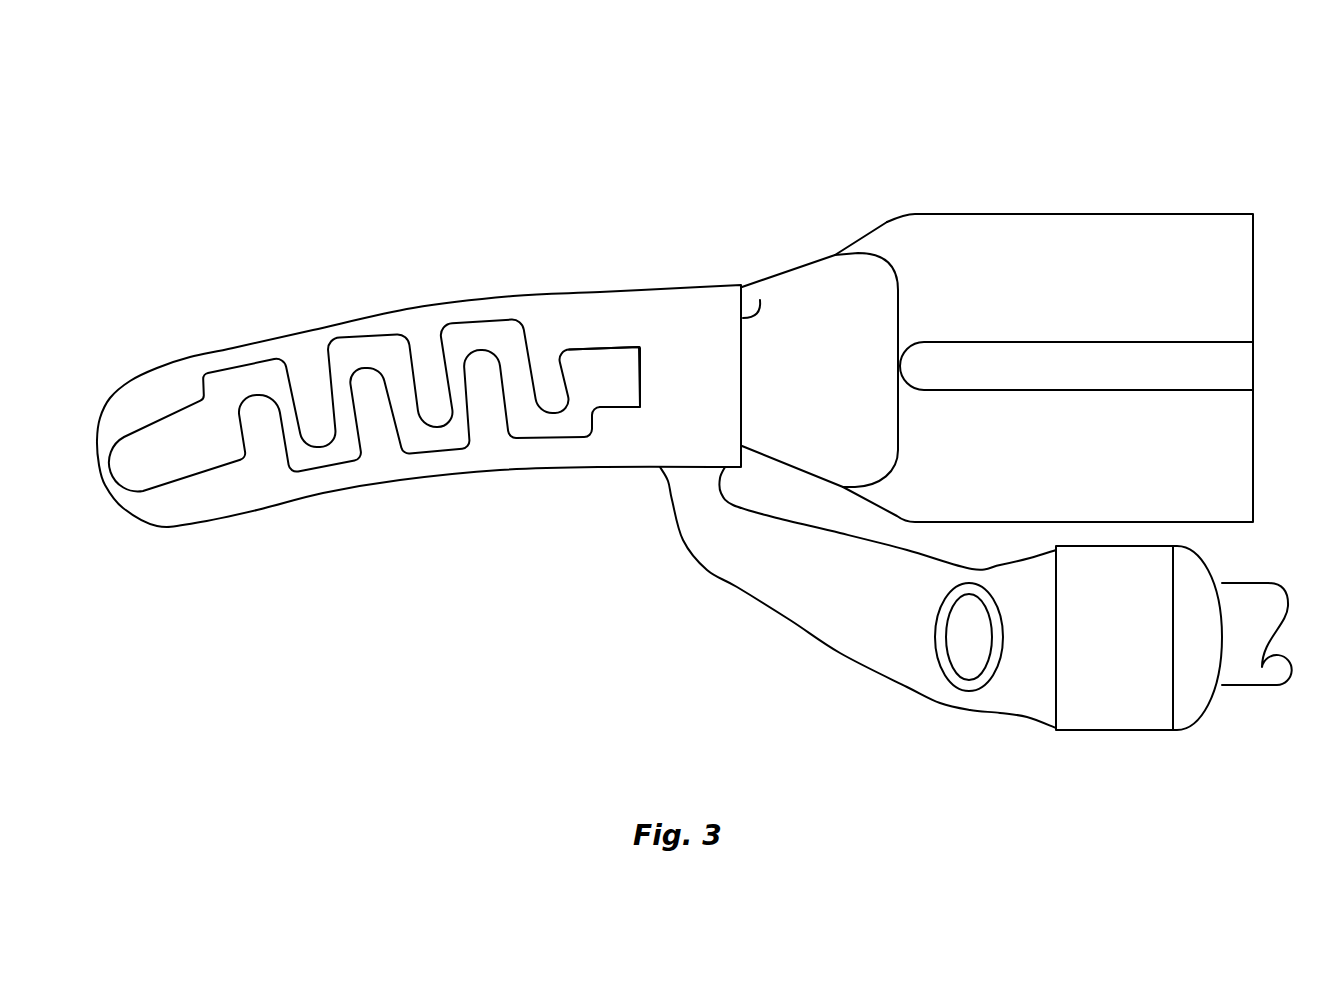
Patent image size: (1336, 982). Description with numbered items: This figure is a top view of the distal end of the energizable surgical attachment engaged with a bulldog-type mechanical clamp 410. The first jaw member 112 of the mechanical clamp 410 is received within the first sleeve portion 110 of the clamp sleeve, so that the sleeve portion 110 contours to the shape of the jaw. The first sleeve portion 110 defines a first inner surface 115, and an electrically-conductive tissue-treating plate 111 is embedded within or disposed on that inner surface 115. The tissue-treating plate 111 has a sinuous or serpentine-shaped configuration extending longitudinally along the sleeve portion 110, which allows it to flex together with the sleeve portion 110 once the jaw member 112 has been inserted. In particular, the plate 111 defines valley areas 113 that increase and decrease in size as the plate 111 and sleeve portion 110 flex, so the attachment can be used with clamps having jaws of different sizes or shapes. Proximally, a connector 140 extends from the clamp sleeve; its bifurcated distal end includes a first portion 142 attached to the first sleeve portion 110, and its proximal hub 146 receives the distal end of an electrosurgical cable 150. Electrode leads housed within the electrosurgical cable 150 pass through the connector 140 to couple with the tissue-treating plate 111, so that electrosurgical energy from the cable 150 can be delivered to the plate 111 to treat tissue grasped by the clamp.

The first sleeve portion 110 is at (232, 352).
The electrically-conductive tissue-treating plate 111 is at (551, 350).
The first jaw member 112 is at (825, 253).
The valley areas 113 is at (420, 340).
The first inner surface 115 is at (760, 300).
The connector 140 is at (930, 705).
The first portion 142 is at (737, 589).
The proximal hub 146 is at (1193, 733).
The electrosurgical cable 150 is at (1288, 608).
The mechanical clamp 410 is at (1099, 193).